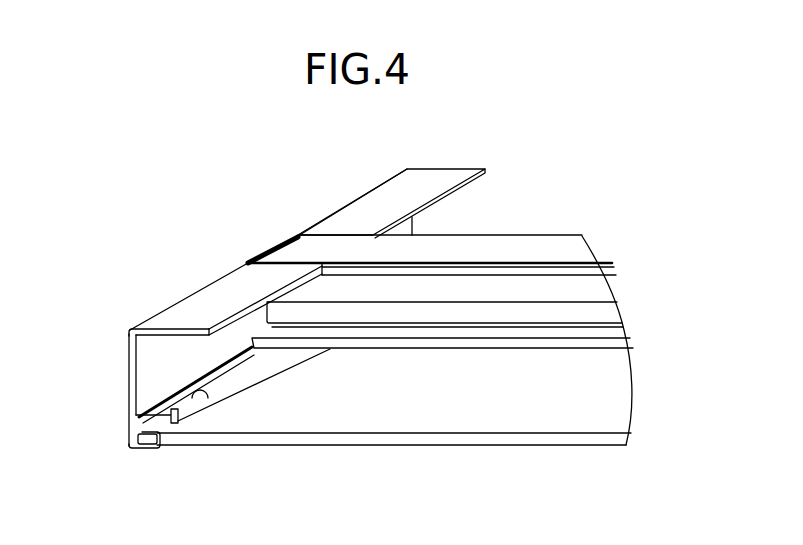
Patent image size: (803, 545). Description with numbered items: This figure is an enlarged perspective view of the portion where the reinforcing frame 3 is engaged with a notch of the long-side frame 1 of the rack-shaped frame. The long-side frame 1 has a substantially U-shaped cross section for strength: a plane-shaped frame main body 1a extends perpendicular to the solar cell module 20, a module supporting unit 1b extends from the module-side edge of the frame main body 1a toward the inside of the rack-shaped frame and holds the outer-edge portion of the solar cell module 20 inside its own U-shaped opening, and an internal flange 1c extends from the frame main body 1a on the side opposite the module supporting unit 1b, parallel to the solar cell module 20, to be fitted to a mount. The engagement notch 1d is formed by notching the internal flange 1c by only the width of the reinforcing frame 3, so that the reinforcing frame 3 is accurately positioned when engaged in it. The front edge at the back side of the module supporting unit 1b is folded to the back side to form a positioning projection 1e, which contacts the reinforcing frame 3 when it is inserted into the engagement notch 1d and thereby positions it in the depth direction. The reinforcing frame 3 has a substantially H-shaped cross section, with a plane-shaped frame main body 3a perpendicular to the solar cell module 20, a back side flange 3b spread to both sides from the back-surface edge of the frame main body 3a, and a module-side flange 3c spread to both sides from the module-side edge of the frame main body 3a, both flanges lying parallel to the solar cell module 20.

The long-side frame 1 is at (373, 185).
The frame main body 1a is at (129, 368).
The module supporting unit 1b is at (129, 443).
The internal flange 1c is at (178, 317).
The engagement notch 1d is at (273, 267).
The positioning projection 1e is at (208, 395).
The reinforcing frame 3 is at (507, 235).
The frame main body 3a is at (453, 287).
The back side flange 3b is at (469, 241).
The module-side flange 3c is at (382, 343).
The solar cell module 20 is at (327, 412).